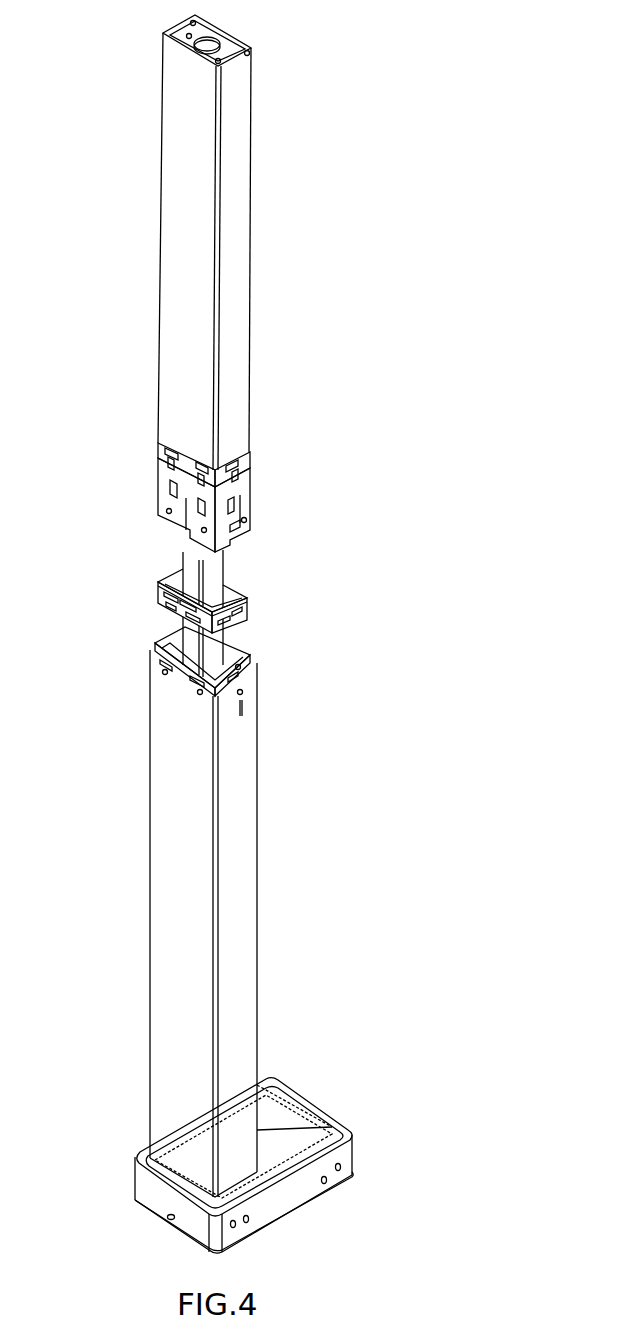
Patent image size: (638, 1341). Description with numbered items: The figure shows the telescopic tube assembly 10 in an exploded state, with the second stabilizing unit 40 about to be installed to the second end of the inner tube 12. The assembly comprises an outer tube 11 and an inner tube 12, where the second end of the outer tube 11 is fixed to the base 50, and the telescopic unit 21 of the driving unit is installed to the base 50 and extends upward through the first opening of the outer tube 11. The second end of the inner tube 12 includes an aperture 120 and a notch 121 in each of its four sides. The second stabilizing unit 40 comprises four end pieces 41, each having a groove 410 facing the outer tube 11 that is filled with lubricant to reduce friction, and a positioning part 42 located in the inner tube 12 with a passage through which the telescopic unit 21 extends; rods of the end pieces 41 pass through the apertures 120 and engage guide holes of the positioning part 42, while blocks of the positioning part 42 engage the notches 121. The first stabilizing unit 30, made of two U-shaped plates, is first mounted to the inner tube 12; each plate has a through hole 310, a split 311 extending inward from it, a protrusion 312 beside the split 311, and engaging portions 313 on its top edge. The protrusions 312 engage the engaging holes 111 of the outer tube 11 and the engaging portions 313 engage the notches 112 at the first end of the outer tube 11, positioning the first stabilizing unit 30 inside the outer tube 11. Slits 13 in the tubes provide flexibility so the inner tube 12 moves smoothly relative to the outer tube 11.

The telescopic tube assembly 10 is at (150, 361).
The outer tube 11 is at (153, 990).
The inner tube 12 is at (180, 206).
The slits 13 is at (244, 520).
The telescopic unit 21 is at (190, 639).
The first stabilizing unit 30 is at (150, 451).
The through hole 310 is at (160, 452).
The split 311 is at (160, 466).
The protrusion 312 is at (163, 452).
The engaging portions 313 is at (250, 462).
The second stabilizing unit 40 is at (146, 586).
The end pieces 41 is at (248, 612).
The groove 410 is at (236, 632).
The positioning part 42 is at (240, 590).
The base 50 is at (153, 652).
The engaging holes 111 is at (238, 715).
The notches 112 is at (258, 681).
The aperture 120 is at (175, 519).
The notch 121 is at (242, 540).